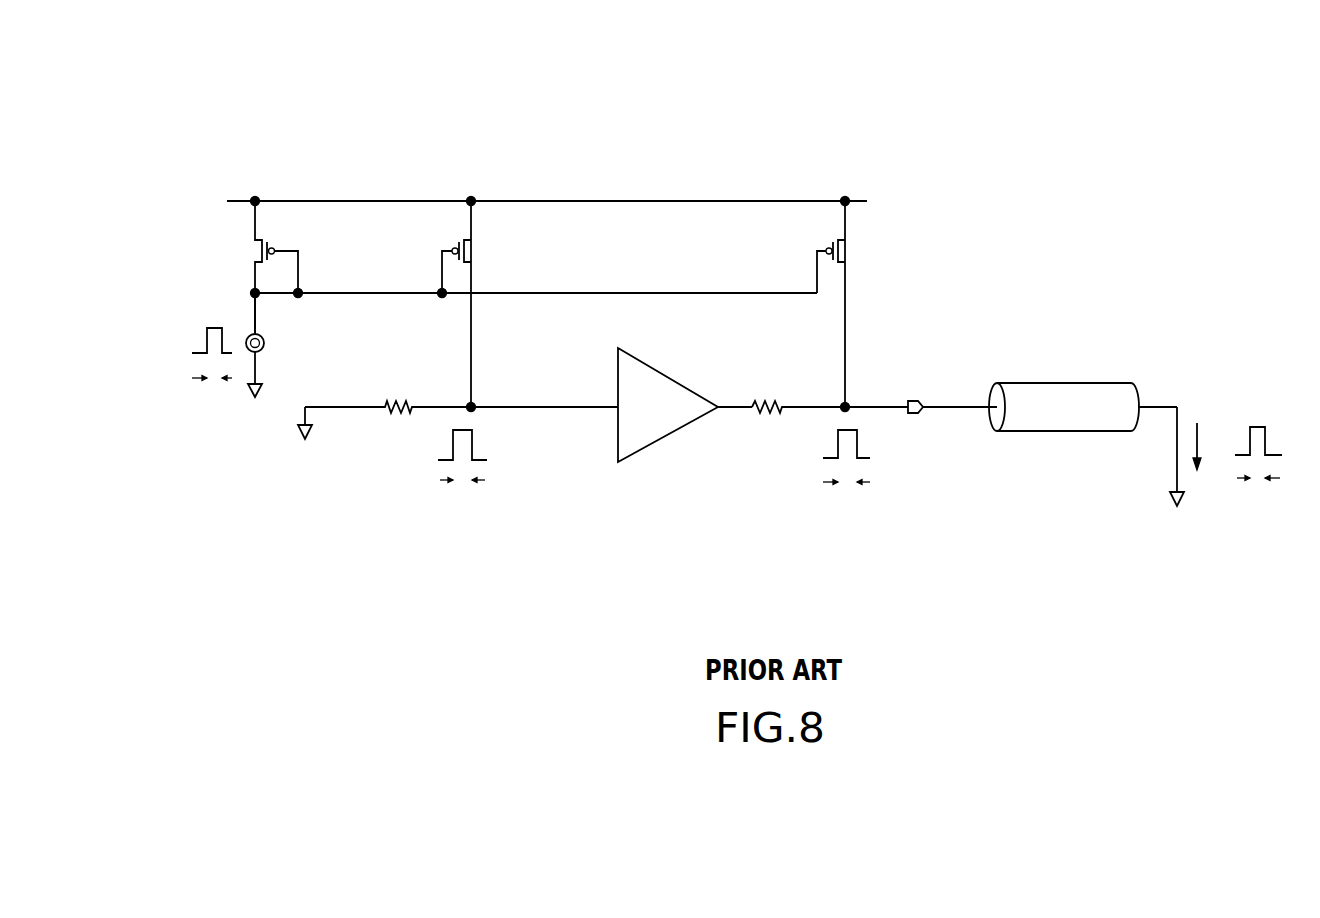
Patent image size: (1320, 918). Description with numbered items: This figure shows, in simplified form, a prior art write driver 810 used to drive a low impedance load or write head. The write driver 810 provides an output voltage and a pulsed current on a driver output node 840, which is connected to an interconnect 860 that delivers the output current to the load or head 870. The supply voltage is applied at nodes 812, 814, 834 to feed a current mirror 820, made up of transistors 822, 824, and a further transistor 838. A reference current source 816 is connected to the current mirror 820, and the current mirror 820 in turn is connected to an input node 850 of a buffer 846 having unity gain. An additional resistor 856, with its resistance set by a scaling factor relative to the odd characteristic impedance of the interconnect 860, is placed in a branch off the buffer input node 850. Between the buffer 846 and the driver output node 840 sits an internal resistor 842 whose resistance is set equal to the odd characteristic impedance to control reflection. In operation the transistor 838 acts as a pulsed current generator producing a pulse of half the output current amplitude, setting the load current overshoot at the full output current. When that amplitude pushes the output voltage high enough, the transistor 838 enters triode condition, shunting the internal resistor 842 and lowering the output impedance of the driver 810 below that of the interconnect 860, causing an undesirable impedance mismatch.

The write driver 810 is at (425, 156).
The supply voltage node 812 is at (255, 200).
The supply voltage node 814 is at (472, 200).
The reference current source 816 is at (263, 342).
The current mirror 820 is at (352, 255).
The transistor 822 is at (264, 238).
The transistor 824 is at (483, 249).
The supply voltage node 834 is at (846, 200).
The transistor 838 is at (890, 232).
The driver output node 840 is at (847, 402).
The internal resistor 842 is at (748, 380).
The buffer 846 is at (672, 430).
The buffer input node 850 is at (472, 407).
The additional resistor 856 is at (383, 447).
The interconnect 860 is at (1092, 337).
The load or head 870 is at (1220, 417).